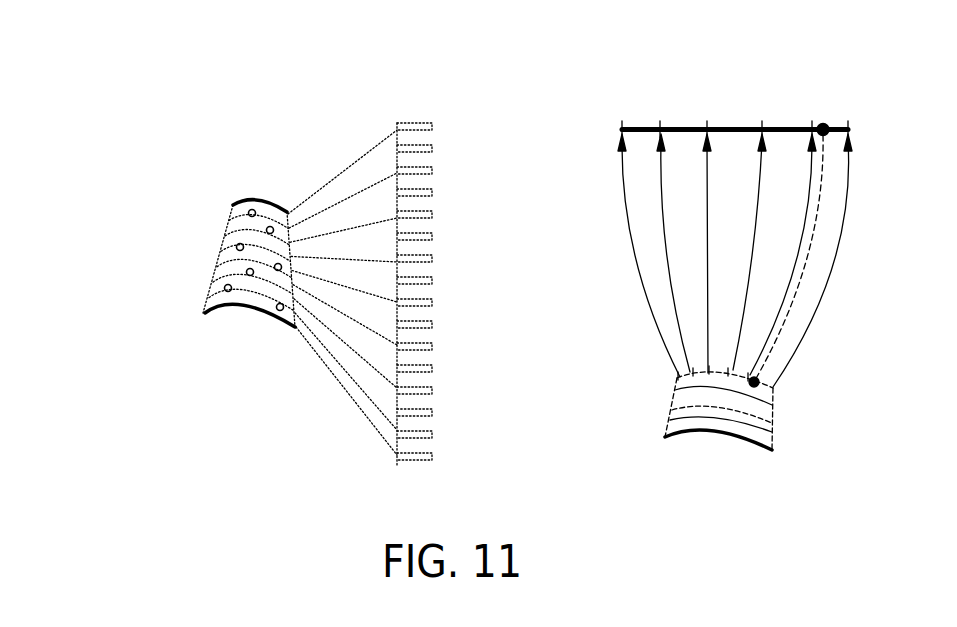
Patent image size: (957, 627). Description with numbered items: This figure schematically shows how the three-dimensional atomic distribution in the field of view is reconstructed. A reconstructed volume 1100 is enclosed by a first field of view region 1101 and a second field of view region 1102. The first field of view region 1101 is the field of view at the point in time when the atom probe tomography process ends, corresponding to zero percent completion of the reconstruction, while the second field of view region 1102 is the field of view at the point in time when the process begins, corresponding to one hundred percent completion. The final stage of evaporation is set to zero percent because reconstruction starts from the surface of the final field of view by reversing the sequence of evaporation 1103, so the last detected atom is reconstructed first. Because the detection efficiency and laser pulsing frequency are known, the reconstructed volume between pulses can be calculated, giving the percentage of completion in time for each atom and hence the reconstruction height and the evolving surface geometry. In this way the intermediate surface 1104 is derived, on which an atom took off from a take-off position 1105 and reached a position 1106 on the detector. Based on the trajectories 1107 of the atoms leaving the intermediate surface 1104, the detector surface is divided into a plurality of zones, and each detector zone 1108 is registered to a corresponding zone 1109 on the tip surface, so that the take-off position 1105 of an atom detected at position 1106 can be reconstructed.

The reconstructed volume 1100 is at (142, 52).
The first field of view region 1101 is at (248, 315).
The second field of view region 1102 is at (252, 196).
The sequence of evaporation 1103 is at (414, 116).
The intermediate surface 1104 is at (228, 263).
The take-off position 1105 is at (758, 380).
The position on the detector 1106 is at (820, 125).
The trajectories 1107 is at (635, 254).
The zone on the detector 1108 is at (630, 125).
The zone on the tip surface 1109 is at (678, 375).